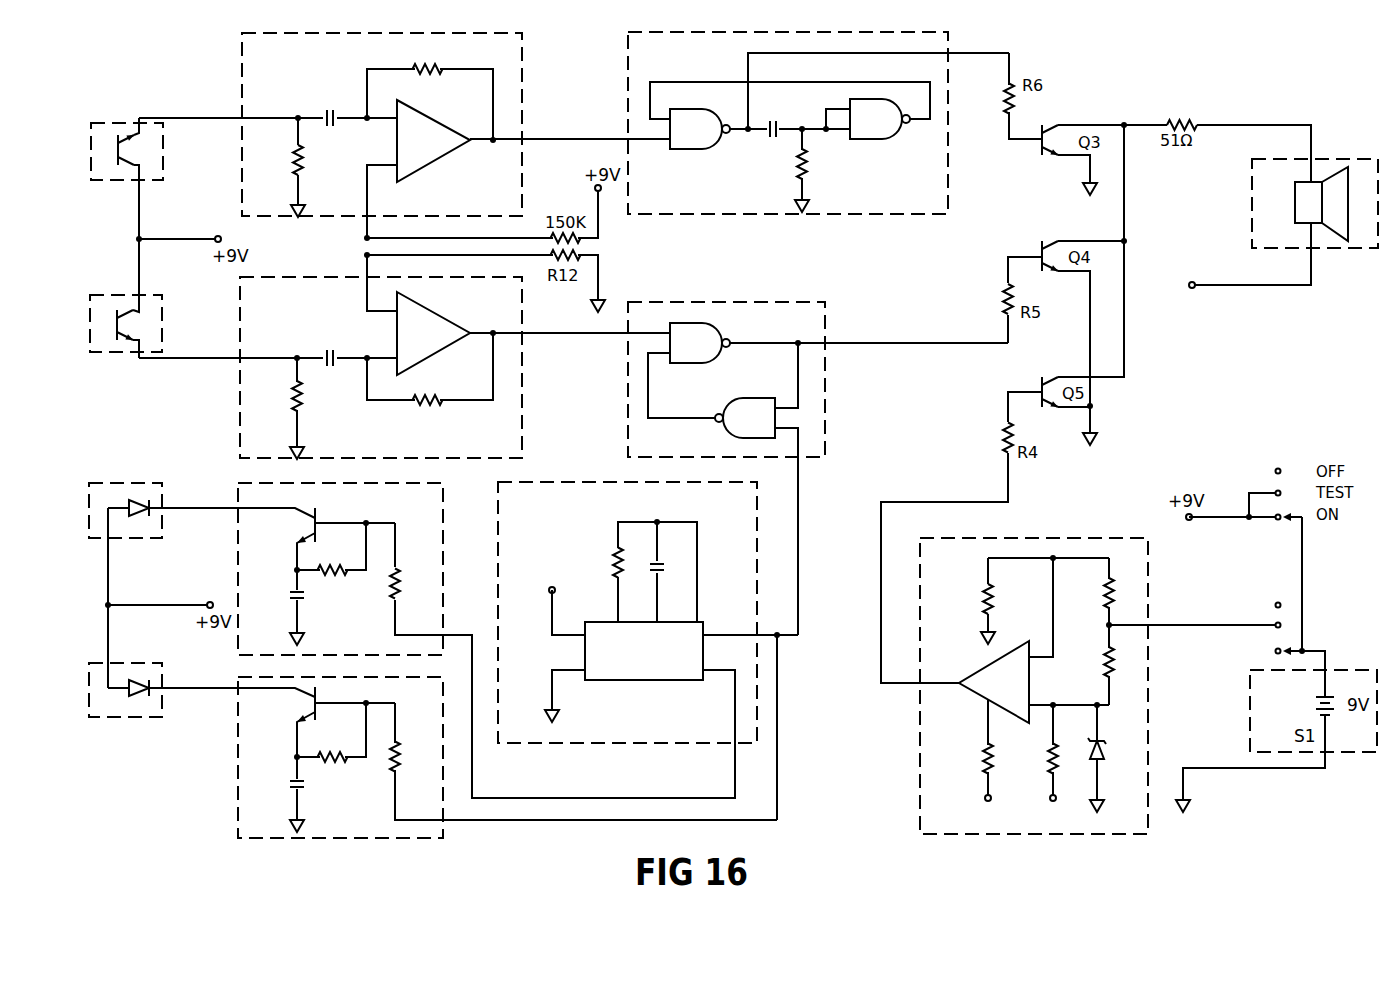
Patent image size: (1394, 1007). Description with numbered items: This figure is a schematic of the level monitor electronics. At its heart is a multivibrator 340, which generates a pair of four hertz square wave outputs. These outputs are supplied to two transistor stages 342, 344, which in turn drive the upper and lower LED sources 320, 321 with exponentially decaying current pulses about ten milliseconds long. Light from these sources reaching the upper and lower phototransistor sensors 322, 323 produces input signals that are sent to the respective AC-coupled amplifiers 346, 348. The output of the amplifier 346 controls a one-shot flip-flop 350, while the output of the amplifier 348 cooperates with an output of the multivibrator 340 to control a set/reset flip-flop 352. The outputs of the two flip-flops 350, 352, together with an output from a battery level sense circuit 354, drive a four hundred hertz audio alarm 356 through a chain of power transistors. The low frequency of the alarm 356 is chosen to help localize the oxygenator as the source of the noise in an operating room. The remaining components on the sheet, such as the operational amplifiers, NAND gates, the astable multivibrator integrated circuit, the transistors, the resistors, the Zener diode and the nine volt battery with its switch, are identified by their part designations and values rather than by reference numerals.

The upper LED source 320 is at (100, 540).
The lower LED source 321 is at (108, 718).
The upper phototransistor sensor 322 is at (95, 122).
The lower phototransistor sensor 323 is at (98, 296).
The multivibrator 340 is at (583, 745).
The transistor stage 342 is at (443, 553).
The transistor stage 344 is at (448, 832).
The AC-coupled amplifier 346 is at (523, 83).
The AC-coupled amplifier 348 is at (522, 422).
The one-shot flip-flop 350 is at (752, 215).
The set/reset flip-flop 352 is at (828, 327).
The battery level sense circuit 354 is at (918, 792).
The audio alarm 356 is at (1332, 252).